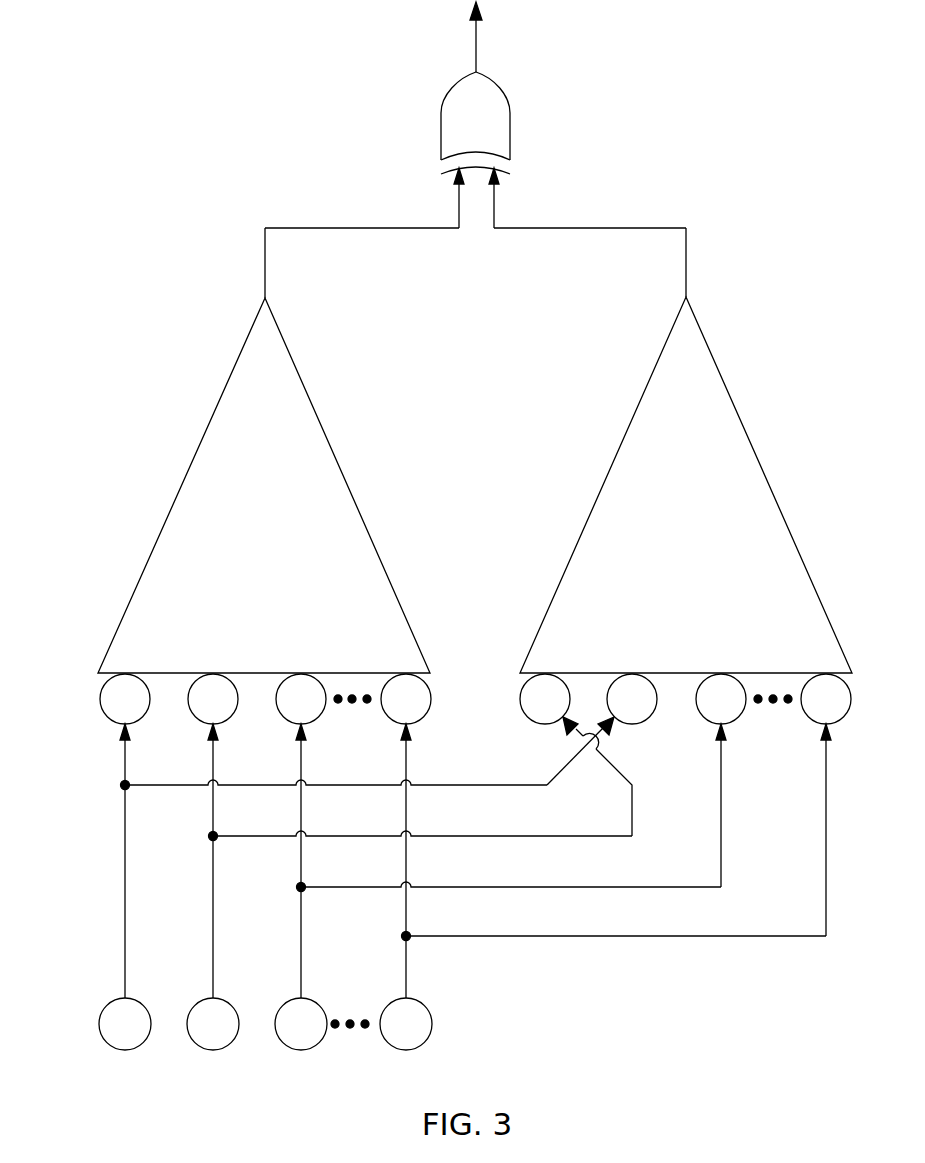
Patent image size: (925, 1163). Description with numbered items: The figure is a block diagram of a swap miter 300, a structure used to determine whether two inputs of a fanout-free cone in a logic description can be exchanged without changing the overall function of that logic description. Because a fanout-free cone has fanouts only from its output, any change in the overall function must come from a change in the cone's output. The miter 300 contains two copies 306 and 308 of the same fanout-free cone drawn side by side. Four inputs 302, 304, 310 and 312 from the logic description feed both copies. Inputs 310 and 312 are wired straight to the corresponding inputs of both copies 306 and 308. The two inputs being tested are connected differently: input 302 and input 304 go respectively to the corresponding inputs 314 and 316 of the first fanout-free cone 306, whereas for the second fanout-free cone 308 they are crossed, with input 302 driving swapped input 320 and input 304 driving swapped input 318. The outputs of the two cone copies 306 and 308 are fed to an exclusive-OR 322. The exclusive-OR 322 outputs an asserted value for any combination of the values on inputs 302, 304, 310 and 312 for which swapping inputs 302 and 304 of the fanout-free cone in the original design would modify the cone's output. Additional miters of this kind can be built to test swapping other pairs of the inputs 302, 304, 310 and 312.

The miter 300 is at (178, 53).
The input 302 is at (100, 1026).
The input 304 is at (188, 1026).
The fanout-free cone copy 306 is at (166, 520).
The fanout-free cone copy 308 is at (588, 520).
The input 310 is at (276, 1026).
The input 312 is at (381, 1026).
The input of fanout-free cone 314 is at (102, 704).
The input of fanout-free cone 316 is at (190, 704).
The swapped input of fanout-free cone 318 is at (522, 704).
The swapped input of fanout-free cone 320 is at (656, 704).
The exclusive-OR 322 is at (441, 124).